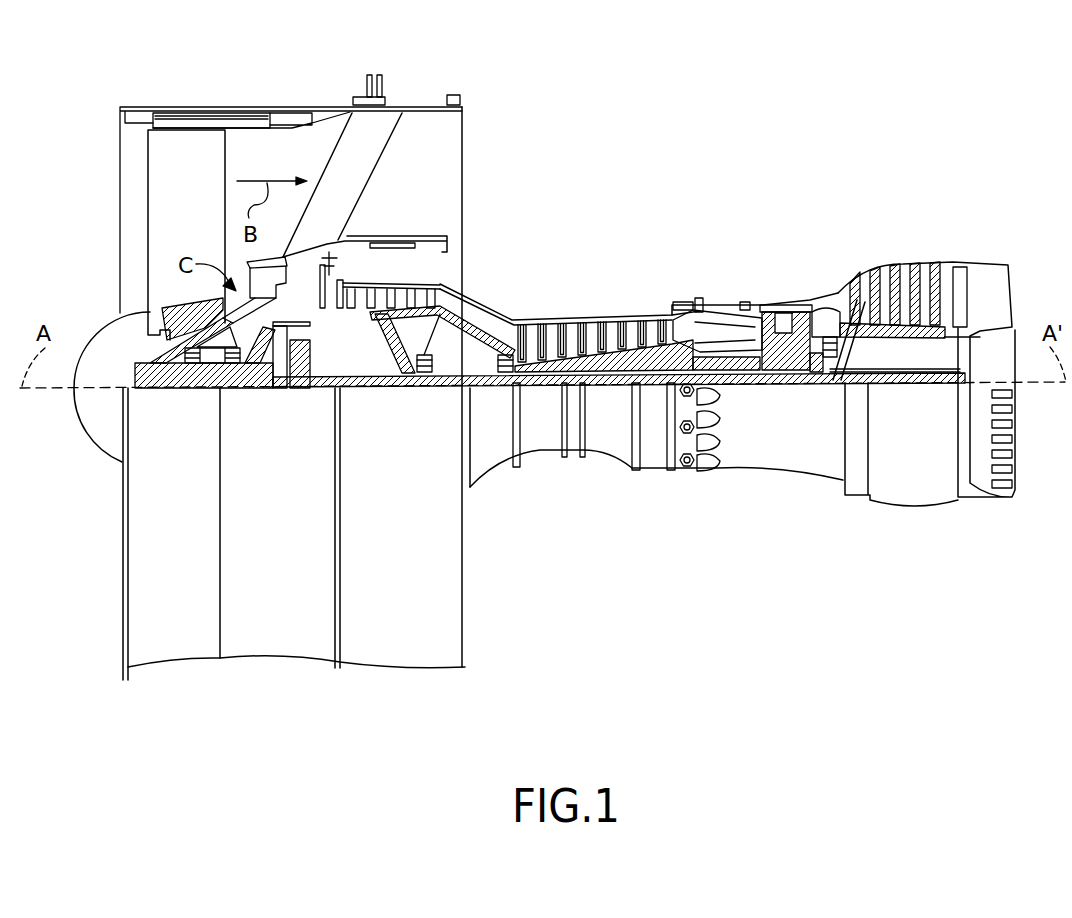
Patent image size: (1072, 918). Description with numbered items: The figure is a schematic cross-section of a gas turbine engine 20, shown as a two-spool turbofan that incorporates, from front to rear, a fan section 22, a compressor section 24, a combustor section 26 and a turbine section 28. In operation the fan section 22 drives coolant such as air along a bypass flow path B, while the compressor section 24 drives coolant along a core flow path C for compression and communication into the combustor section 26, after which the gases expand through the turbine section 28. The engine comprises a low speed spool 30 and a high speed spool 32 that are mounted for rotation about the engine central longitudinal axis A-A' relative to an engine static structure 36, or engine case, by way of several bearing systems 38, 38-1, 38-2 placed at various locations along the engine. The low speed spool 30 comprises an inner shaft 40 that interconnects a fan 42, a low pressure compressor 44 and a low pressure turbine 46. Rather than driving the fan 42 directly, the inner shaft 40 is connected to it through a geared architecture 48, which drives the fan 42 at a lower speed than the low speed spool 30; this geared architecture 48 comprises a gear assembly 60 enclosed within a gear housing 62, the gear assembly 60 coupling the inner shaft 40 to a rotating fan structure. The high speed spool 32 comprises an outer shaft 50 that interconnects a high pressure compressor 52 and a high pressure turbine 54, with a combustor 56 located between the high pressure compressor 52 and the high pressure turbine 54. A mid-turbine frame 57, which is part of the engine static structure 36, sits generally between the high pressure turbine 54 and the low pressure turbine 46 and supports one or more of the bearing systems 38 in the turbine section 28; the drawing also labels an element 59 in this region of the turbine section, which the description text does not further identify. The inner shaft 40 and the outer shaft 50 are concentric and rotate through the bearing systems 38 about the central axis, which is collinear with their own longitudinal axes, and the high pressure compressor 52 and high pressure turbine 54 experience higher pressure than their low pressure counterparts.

The gas turbine engine 20 is at (766, 95).
The fan section 22 is at (311, 93).
The compressor section 24 is at (337, 205).
The combustor section 26 is at (767, 205).
The turbine section 28 is at (958, 205).
The low speed spool 30 is at (616, 395).
The high speed spool 32 is at (660, 347).
The engine static structure 36 is at (282, 647).
The bearing system 38 is at (823, 386).
The bearing system 38-1 is at (198, 368).
The bearing system 38-2 is at (423, 372).
The inner shaft 40 is at (484, 388).
The fan 42 is at (188, 233).
The low pressure compressor 44 is at (403, 293).
The low pressure turbine 46 is at (903, 277).
The geared architecture 48 is at (296, 422).
The outer shaft 50 is at (708, 385).
The high pressure compressor 52 is at (628, 350).
The high pressure turbine 54 is at (782, 308).
The combustor 56 is at (720, 323).
The mid-turbine frame 57 is at (828, 317).
The airfoils 59 is at (838, 322).
The gear assembly 60 is at (312, 357).
The gear housing 62 is at (312, 336).